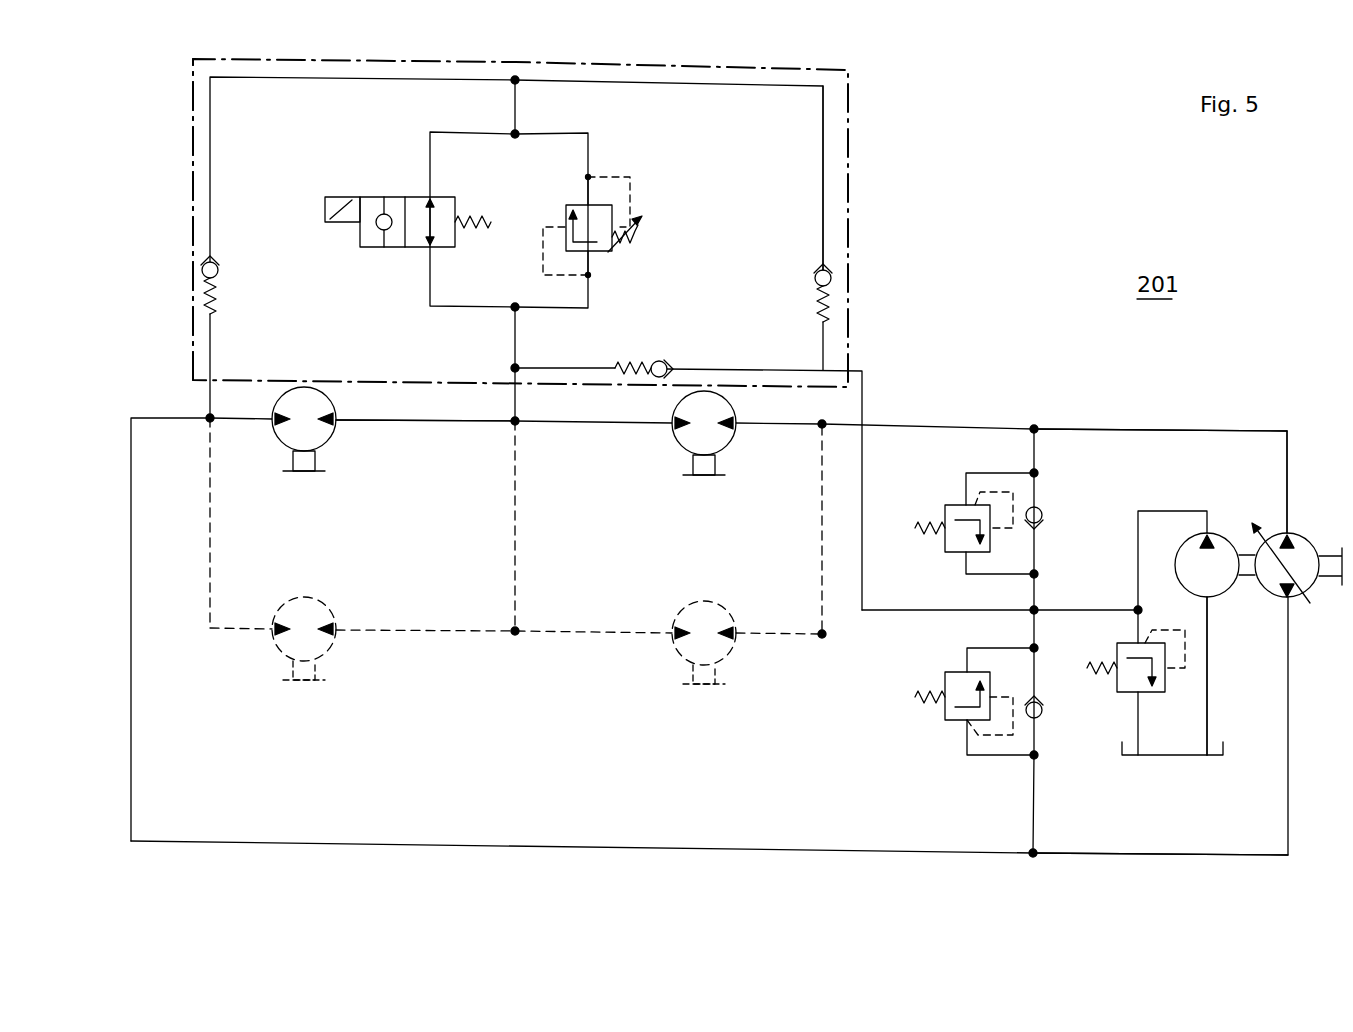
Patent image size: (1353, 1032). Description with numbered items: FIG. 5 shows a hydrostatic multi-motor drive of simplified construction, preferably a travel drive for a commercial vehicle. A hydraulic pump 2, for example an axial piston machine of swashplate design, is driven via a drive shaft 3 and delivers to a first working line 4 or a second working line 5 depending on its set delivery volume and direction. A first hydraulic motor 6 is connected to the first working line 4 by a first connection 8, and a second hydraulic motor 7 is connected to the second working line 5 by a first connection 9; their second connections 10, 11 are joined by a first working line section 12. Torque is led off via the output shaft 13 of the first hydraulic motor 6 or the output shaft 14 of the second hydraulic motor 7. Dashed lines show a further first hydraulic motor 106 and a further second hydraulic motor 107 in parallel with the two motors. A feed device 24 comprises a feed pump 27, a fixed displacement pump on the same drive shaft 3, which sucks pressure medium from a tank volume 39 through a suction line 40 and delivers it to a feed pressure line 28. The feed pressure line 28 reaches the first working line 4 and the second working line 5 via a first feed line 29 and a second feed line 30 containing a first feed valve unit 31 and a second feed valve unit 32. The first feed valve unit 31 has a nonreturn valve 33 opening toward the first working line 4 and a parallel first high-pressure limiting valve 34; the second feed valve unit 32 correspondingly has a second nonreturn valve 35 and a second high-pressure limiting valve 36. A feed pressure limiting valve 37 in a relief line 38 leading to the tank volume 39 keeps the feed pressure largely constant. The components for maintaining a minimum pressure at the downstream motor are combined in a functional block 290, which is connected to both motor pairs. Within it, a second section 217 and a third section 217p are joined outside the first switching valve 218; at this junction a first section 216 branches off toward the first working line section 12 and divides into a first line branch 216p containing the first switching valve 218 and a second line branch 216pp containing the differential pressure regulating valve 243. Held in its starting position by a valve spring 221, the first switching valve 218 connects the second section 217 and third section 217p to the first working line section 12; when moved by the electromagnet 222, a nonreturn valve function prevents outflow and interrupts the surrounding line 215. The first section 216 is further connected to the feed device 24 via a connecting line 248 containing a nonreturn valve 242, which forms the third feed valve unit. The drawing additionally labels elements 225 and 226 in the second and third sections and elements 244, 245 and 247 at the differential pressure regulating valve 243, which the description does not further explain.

The hydraulic pump 2 is at (1291, 560).
The drive shaft 3 is at (1338, 578).
The first working line 4 is at (1090, 428).
The second working line 5 is at (1156, 854).
The first hydraulic motor 6 is at (702, 459).
The second hydraulic motor 7 is at (308, 456).
The first connection 8 is at (738, 428).
The first connection of the second hydraulic motor 9 is at (272, 421).
The second connection 10 is at (672, 425).
The second connection 11 is at (338, 426).
The first working line section 12 is at (452, 428).
The output shaft 13 is at (705, 482).
The output shaft 14 is at (305, 478).
The feed device 24 is at (1200, 465).
The feed pump 27 is at (1217, 586).
The feed pressure line 28 is at (1166, 510).
The first feed line 29 is at (1036, 452).
The second feed line 30 is at (1035, 805).
The first feed valve unit 31 is at (950, 526).
The second feed valve unit 32 is at (965, 724).
The nonreturn valve 33 is at (1043, 512).
The first high-pressure limiting valve 34 is at (930, 548).
The second nonreturn valve 35 is at (1043, 713).
The second high-pressure limiting valve 36 is at (945, 710).
The feed pressure limiting valve 37 is at (1117, 684).
The relief line 38 is at (1140, 730).
The tank volume 39 is at (1218, 762).
The suction line 40 is at (1208, 700).
The further first hydraulic motor 106 is at (718, 656).
The further second hydraulic motor 107 is at (318, 652).
The surrounding line 215 is at (182, 116).
The first section 216 is at (515, 104).
The first line branch 216p is at (430, 134).
The second line branch 216pp is at (588, 150).
The second section 217 is at (210, 207).
The third section 217p is at (823, 232).
The first switching valve 218 is at (416, 198).
The valve spring 221 is at (476, 212).
The electromagnet 222 is at (335, 222).
The check valve 225 is at (219, 274).
The check valve 226 is at (814, 281).
The nonreturn valve 242 is at (660, 360).
The differential pressure regulating valve 243 is at (600, 252).
The adjustable spring 244 is at (638, 242).
The control line 245 is at (543, 265).
The control line 247 is at (632, 195).
The connecting line 248 is at (890, 612).
The functional block 290 is at (848, 92).